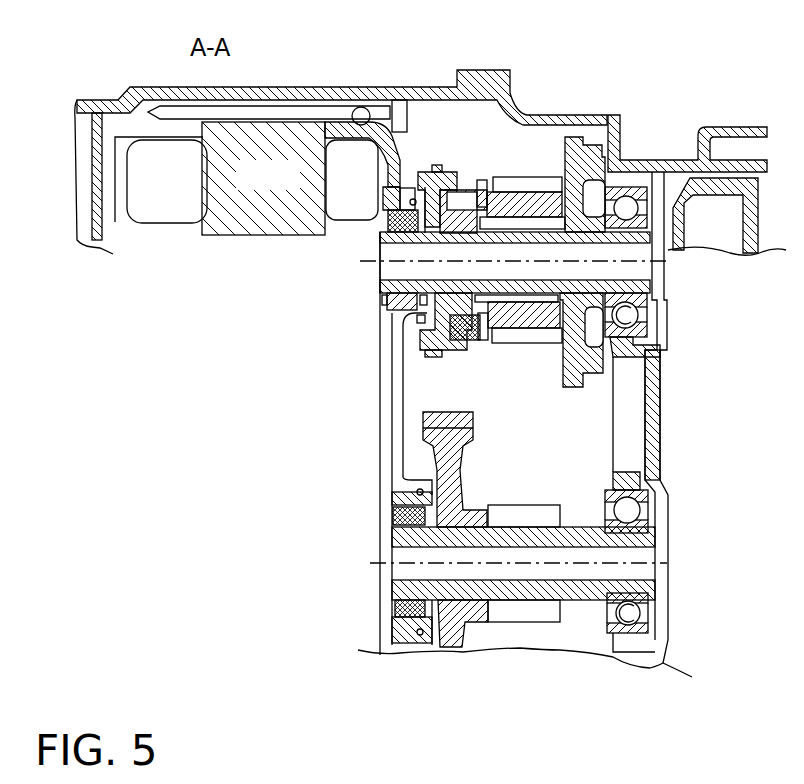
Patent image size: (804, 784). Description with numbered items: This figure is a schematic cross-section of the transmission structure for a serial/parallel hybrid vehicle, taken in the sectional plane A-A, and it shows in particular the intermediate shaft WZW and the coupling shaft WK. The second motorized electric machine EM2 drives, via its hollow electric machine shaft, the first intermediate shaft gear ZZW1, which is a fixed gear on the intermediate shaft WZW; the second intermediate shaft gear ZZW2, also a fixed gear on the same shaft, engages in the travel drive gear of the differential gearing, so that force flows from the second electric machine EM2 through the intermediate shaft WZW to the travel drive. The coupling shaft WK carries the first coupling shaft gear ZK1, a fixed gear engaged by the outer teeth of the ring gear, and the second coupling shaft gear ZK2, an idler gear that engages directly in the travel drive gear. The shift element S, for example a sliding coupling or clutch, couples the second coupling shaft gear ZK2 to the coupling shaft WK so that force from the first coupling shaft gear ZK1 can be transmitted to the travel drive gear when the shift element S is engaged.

The shift element S is at (459, 187).
The second coupling shaft gear ZK2 is at (524, 207).
The first coupling shaft gear ZK1 is at (584, 175).
The coupling shaft WK is at (403, 272).
The first intermediate shaft gear ZZW1 is at (441, 438).
The intermediate shaft WZW is at (433, 555).
The second intermediate shaft gear ZZW2 is at (520, 613).
The second electric machine EM2 is at (298, 189).